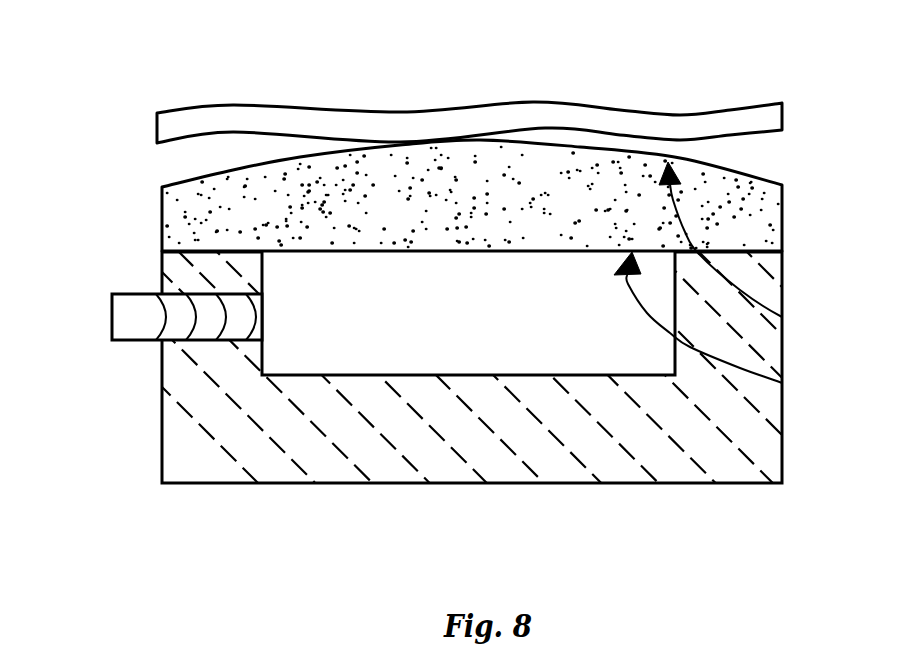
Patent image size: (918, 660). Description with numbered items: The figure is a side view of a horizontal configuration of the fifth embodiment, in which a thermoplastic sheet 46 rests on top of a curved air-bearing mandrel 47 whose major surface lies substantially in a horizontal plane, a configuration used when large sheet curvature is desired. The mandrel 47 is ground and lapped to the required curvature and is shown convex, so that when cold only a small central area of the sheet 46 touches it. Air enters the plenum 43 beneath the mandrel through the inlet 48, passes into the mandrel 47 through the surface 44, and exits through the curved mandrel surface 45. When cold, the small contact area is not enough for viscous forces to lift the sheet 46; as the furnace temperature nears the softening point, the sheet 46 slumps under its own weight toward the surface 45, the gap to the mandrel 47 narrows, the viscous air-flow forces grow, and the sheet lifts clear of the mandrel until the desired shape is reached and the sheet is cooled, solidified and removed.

The plenum 43 is at (592, 343).
The mandrel inlet surface 44 is at (782, 383).
The curved mandrel surface 45 is at (782, 317).
The sheet 46 is at (758, 105).
The mandrel 47 is at (723, 210).
The inlet 48 is at (113, 318).